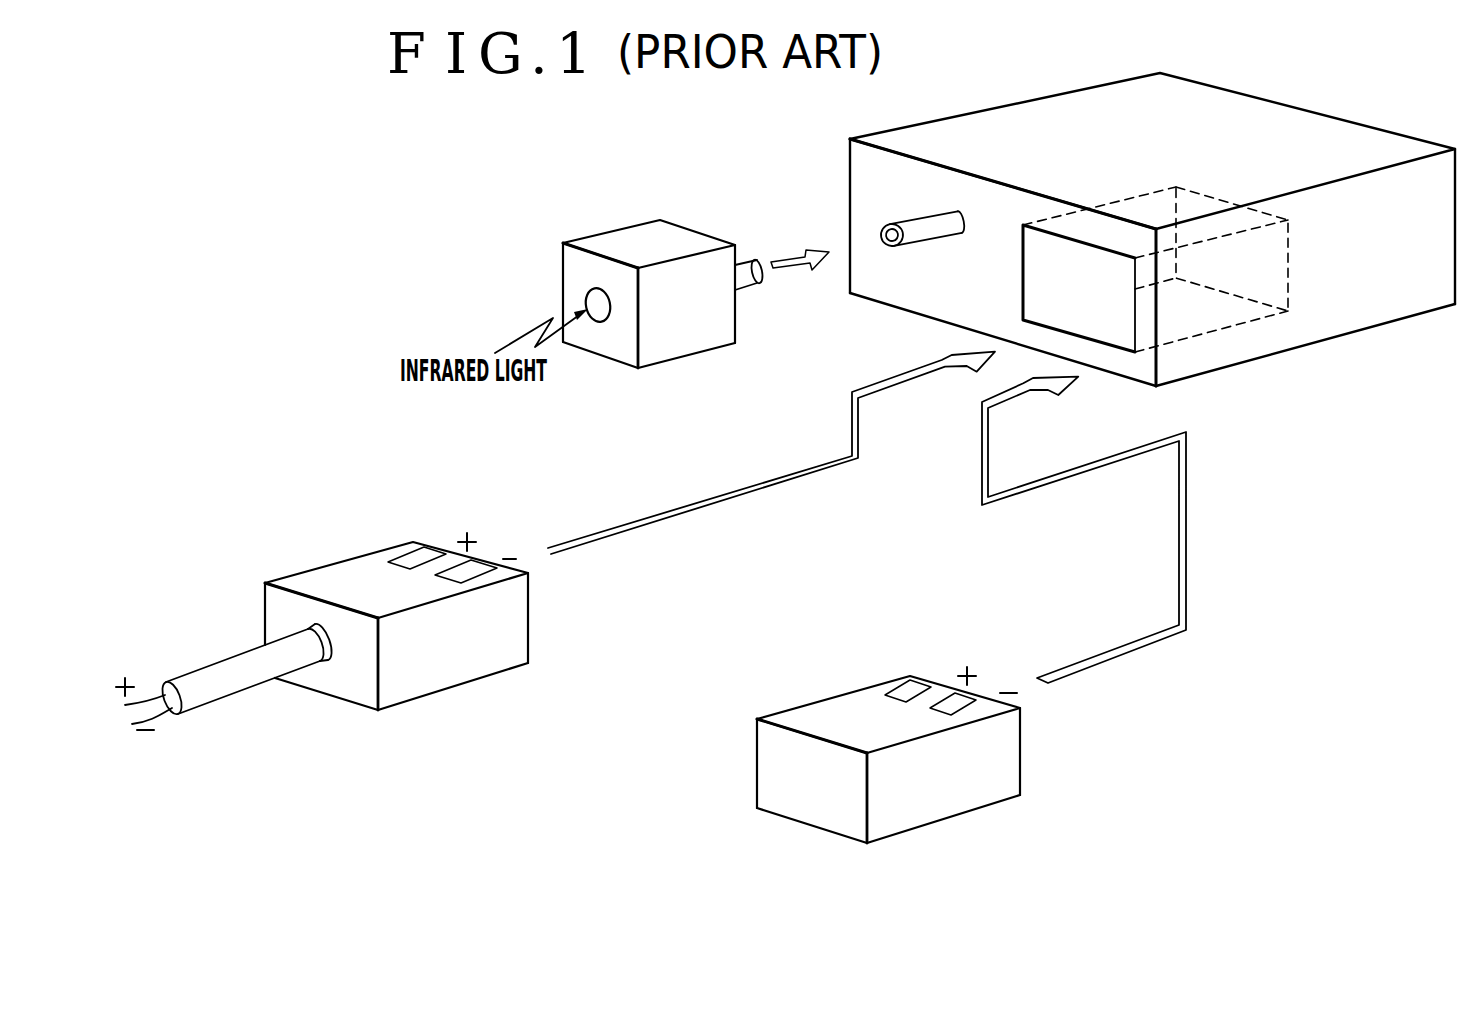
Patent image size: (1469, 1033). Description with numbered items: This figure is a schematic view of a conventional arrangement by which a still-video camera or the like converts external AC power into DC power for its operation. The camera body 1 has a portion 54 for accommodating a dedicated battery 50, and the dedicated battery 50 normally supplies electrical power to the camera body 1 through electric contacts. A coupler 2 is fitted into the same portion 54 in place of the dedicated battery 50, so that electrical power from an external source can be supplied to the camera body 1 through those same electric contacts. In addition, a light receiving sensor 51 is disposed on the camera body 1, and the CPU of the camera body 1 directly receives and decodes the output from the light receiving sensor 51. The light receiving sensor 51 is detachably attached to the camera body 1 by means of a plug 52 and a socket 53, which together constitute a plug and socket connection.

The camera body 1 is at (1268, 127).
The coupler 2 is at (350, 680).
The dedicated battery 50 is at (838, 802).
The light receiving sensor 51 is at (612, 240).
The plug 52 is at (752, 260).
The socket 53 is at (887, 250).
The portion for accommodating the dedicated battery 54 is at (1261, 280).